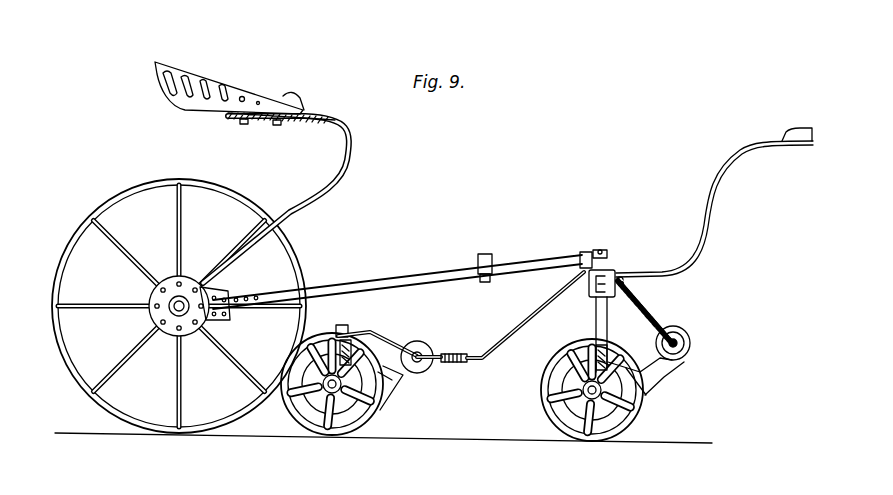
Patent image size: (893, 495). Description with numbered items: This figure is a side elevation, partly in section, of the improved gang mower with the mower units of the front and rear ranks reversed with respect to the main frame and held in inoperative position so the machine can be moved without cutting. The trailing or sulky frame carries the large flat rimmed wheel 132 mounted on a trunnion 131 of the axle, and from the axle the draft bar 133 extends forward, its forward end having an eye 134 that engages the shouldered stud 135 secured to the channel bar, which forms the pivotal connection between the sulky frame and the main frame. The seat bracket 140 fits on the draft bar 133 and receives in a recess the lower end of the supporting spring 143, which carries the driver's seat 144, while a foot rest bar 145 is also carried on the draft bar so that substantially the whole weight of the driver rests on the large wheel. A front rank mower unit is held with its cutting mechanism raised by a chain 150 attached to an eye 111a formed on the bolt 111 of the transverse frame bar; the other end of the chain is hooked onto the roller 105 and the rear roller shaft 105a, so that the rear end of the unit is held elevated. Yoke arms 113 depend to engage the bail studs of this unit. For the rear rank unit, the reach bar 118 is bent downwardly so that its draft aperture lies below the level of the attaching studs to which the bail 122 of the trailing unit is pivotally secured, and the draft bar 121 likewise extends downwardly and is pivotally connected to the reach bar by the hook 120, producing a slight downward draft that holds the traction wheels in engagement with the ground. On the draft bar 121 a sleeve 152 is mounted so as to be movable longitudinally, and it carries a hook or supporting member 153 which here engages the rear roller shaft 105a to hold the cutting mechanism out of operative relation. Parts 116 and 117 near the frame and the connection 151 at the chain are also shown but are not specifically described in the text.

The rear roller 105 is at (684, 343).
The rear roller shaft 105a is at (677, 347).
The bolt 111 is at (582, 282).
The eye 111a is at (621, 278).
The yoke arm 113 is at (597, 322).
The hand grip 116 is at (800, 128).
The hand lever 117 is at (742, 150).
The reach bar 118 is at (540, 262).
The hook shaped connection 120 is at (460, 352).
The draft bar 121 is at (374, 338).
The bail 122 is at (340, 325).
The trunnion 131 is at (172, 304).
The large flat rimmed wheel 132 is at (80, 236).
The draft bar 133 is at (346, 281).
The eye 134 is at (612, 266).
The shouldered stud 135 is at (600, 250).
The seat bracket 140 is at (220, 287).
The supporting spring 143 is at (344, 146).
The seat 144 is at (178, 102).
The foot rest bar 145 is at (486, 254).
The chain 150 is at (650, 312).
The chain connection 151 is at (626, 286).
The sleeve 152 is at (418, 352).
The supporting member 153 is at (424, 365).